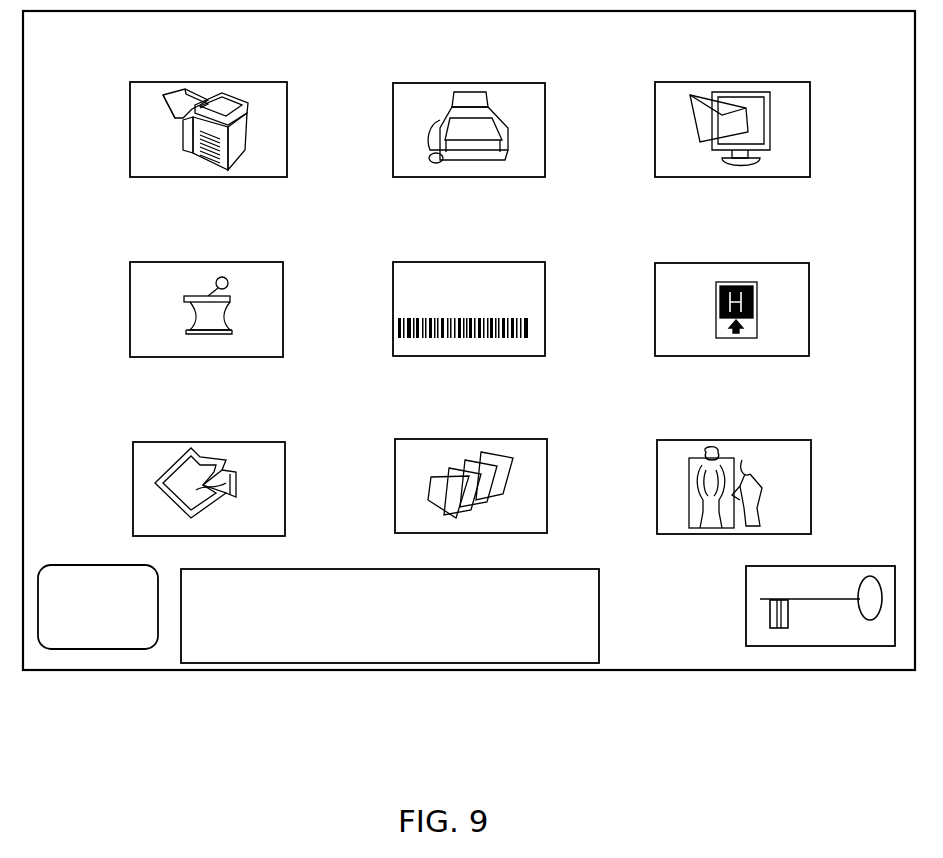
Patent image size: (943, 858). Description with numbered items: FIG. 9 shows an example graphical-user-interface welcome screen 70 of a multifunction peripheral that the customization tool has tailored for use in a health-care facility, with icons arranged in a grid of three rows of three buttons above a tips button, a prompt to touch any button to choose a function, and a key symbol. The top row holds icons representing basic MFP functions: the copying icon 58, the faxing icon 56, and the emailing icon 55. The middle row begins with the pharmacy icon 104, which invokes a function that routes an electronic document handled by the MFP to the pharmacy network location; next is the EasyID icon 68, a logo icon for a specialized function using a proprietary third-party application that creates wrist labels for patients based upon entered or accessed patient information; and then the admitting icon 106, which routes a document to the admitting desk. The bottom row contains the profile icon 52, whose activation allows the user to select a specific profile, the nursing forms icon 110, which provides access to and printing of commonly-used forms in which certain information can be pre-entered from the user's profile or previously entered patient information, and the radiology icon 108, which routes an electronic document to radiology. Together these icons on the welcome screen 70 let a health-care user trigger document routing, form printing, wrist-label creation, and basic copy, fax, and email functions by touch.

The welcome screen 70 is at (98, 671).
The copying icon 58 is at (130, 128).
The faxing icon 56 is at (393, 128).
The emailing icon 55 is at (655, 128).
The pharmacy icon 104 is at (130, 308).
The EasyID icon 68 is at (393, 308).
The admitting icon 106 is at (655, 308).
The profile icon 52 is at (133, 488).
The nursing forms icon 110 is at (395, 488).
The radiology icon 108 is at (657, 488).